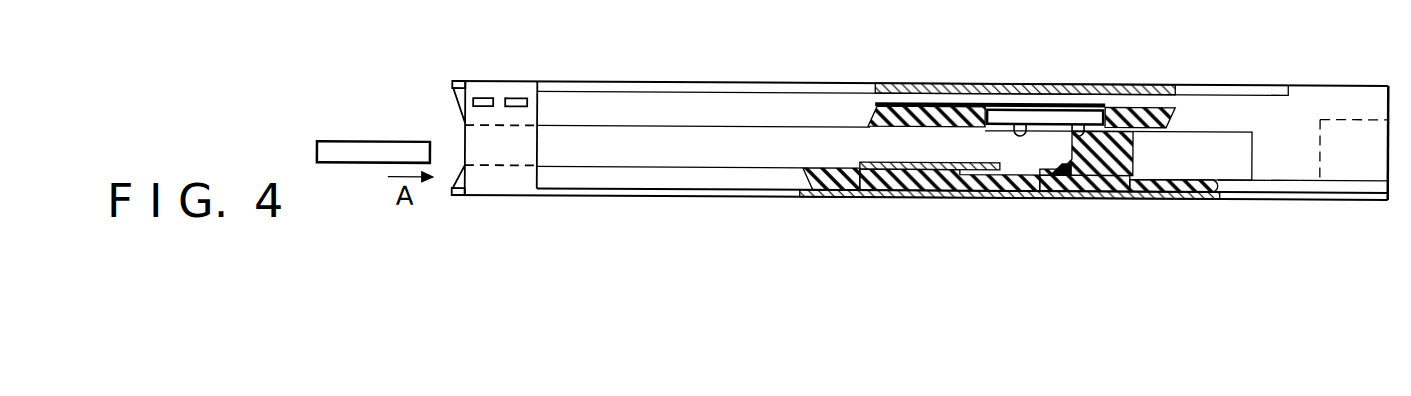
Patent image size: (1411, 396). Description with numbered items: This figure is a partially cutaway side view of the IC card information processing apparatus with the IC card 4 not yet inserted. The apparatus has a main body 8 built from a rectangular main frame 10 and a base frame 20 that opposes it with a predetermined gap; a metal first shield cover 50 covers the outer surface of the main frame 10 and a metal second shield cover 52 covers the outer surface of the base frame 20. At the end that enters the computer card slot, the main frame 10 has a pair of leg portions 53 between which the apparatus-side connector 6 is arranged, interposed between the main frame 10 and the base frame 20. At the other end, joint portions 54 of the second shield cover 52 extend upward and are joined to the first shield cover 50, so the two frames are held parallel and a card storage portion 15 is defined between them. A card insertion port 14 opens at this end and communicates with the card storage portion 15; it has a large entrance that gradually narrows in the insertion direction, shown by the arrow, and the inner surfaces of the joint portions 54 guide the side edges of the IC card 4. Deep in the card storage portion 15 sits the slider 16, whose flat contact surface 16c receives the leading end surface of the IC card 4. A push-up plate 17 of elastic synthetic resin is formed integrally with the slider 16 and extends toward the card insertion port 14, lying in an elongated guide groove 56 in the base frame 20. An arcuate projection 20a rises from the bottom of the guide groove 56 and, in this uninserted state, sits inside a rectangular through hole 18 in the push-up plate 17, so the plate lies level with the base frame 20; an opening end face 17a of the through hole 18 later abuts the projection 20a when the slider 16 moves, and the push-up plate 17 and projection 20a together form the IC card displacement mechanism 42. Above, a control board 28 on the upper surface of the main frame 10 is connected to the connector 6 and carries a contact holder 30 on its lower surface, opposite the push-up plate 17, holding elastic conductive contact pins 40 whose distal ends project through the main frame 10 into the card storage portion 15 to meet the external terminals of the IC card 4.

The IC card 4 is at (350, 142).
The card insertion port 14 is at (452, 137).
The joint portions 54 is at (532, 172).
The first shield cover 50 is at (784, 80).
The main frame 10 is at (656, 100).
The card storage portion 15 is at (665, 150).
The base frame 20 is at (743, 178).
The apparatus-side connector 6 is at (1352, 172).
The main body 8 is at (1349, 79).
The control board 28 is at (915, 100).
The contact holder 30 is at (998, 108).
The contact pins 40 is at (1077, 105).
The slider 16 is at (1110, 186).
The flat contact surface 16c is at (1133, 150).
The push-up plate 17 is at (890, 193).
The opening end face 17a is at (952, 193).
The through hole 18 is at (1003, 192).
The projection 20a is at (1040, 193).
The IC card displacement mechanism 42 is at (1063, 190).
The guide groove 56 is at (1205, 176).
The second shield cover 52 is at (1167, 195).
The leg portions 53 is at (1293, 173).